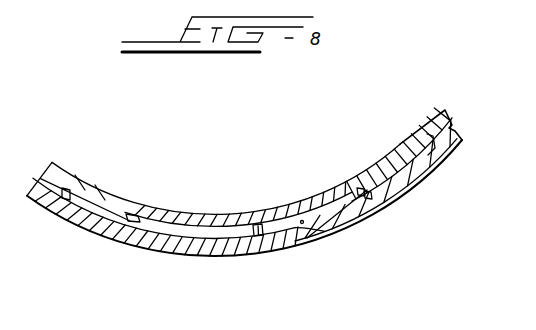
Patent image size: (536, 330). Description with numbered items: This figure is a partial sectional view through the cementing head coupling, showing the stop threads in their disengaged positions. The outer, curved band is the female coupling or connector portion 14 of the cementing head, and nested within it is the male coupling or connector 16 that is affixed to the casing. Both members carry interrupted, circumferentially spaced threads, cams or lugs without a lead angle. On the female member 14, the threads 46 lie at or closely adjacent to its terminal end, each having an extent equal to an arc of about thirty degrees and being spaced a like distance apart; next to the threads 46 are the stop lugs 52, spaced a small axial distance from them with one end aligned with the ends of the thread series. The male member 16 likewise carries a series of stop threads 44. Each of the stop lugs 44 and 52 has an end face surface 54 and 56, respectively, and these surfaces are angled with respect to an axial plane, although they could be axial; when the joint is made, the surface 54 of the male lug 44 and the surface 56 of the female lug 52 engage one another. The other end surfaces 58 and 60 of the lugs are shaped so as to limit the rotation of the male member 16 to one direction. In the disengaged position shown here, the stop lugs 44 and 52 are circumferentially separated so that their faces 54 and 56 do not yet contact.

The female coupling or connector portion 14 is at (213, 259).
The male coupling or connector 16 is at (303, 201).
The stop threads 44 is at (107, 209).
The threads 46 is at (271, 232).
The stop threads 52 is at (336, 208).
The end face surface 54 is at (303, 222).
The end face surface 56 is at (133, 218).
The other end surface 58 is at (372, 194).
The other end surface 60 is at (352, 190).